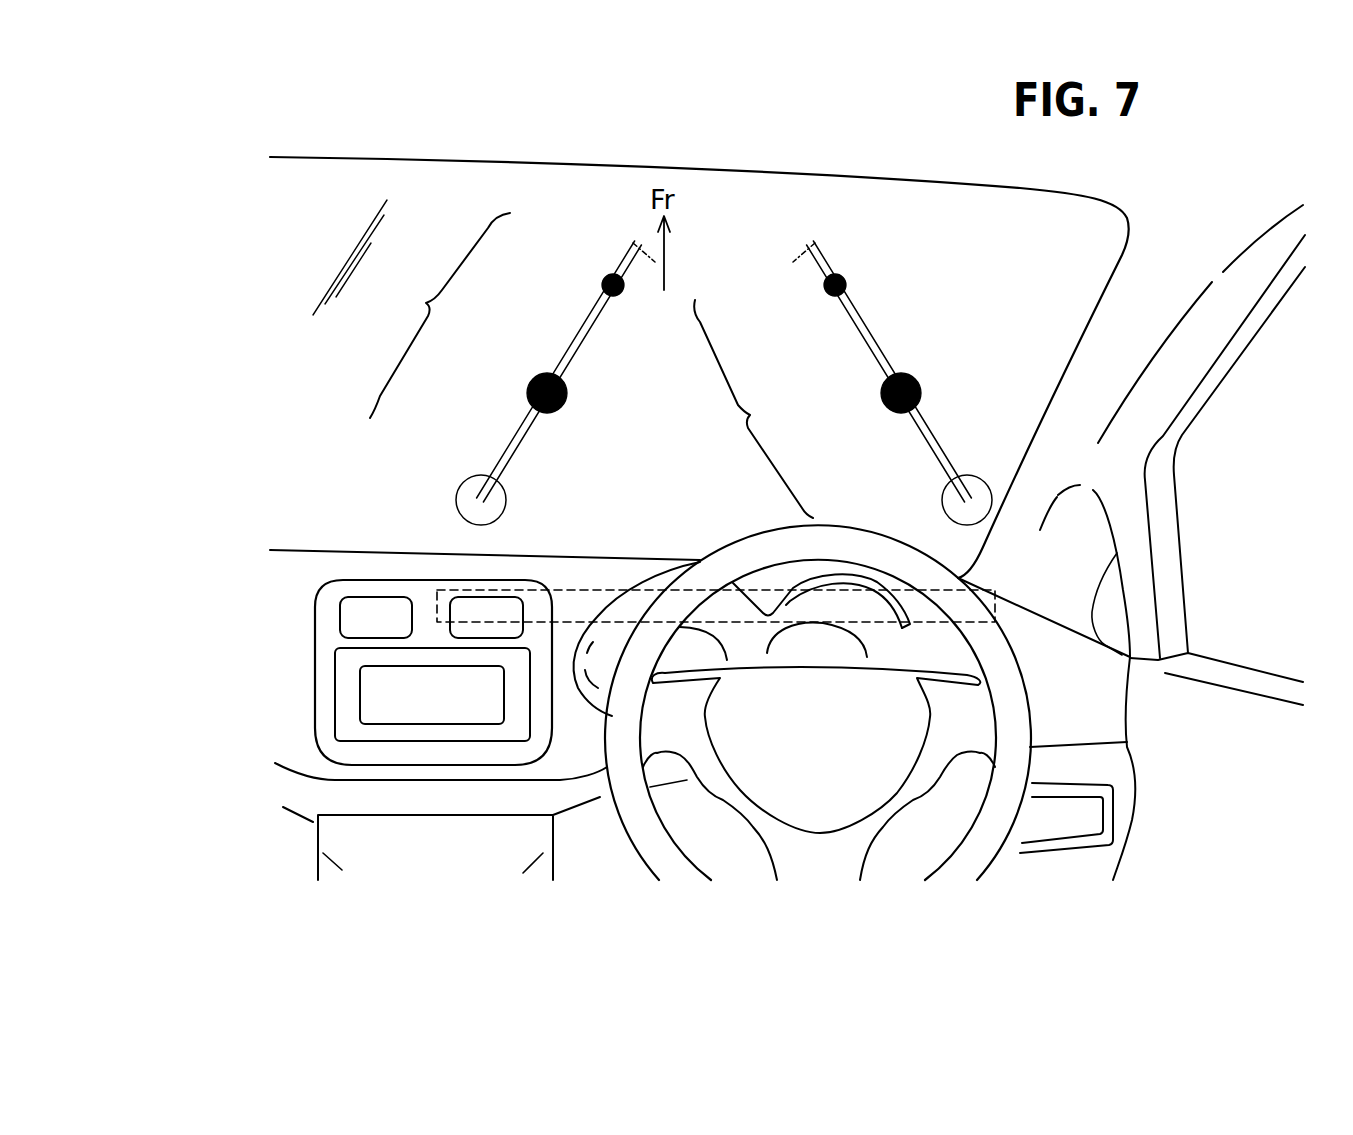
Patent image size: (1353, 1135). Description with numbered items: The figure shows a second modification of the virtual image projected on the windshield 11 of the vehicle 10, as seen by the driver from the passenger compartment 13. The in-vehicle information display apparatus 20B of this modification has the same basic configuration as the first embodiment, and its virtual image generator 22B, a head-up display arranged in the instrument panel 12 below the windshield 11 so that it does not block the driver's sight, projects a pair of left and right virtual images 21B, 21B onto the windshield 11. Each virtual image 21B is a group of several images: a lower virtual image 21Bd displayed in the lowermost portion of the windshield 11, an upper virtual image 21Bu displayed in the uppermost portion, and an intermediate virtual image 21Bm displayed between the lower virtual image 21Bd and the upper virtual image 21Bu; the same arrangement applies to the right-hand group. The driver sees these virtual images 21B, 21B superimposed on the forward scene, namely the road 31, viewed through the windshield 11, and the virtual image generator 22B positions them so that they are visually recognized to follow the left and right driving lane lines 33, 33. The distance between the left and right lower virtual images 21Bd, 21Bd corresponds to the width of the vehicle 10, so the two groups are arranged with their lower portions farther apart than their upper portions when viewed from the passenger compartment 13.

The vehicle 10 is at (1232, 223).
The windshield 11 is at (345, 215).
The instrument panel 12 is at (275, 607).
The passenger compartment 13 is at (620, 940).
The in-vehicle information display apparatus 20B is at (420, 568).
The virtual image 21B is at (670, 365).
The upper virtual image 21Bu is at (604, 278).
The intermediate virtual image 21Bm is at (530, 382).
The lower virtual image 21Bd is at (460, 478).
The virtual image generator 22B is at (480, 590).
The road 31 is at (686, 274).
The driving lane line 33 is at (634, 243).